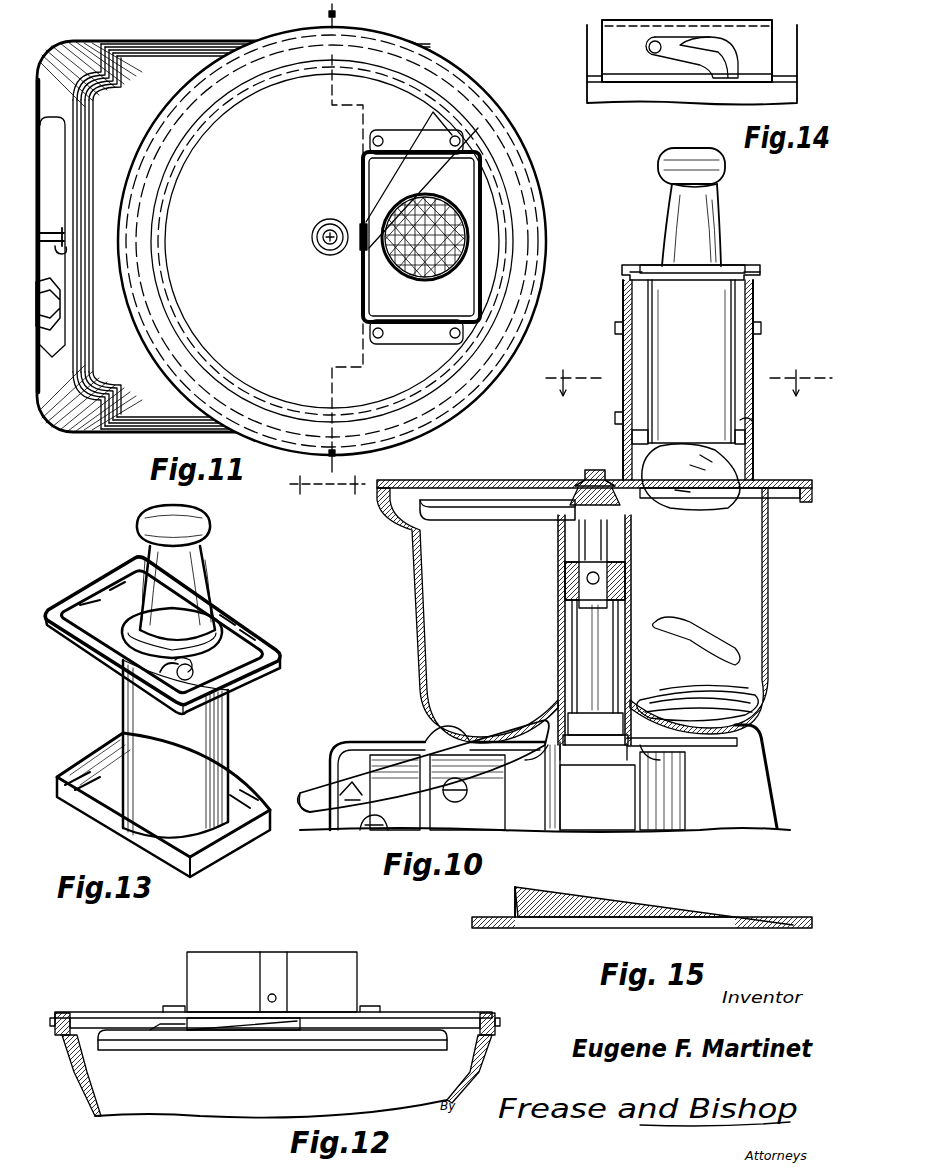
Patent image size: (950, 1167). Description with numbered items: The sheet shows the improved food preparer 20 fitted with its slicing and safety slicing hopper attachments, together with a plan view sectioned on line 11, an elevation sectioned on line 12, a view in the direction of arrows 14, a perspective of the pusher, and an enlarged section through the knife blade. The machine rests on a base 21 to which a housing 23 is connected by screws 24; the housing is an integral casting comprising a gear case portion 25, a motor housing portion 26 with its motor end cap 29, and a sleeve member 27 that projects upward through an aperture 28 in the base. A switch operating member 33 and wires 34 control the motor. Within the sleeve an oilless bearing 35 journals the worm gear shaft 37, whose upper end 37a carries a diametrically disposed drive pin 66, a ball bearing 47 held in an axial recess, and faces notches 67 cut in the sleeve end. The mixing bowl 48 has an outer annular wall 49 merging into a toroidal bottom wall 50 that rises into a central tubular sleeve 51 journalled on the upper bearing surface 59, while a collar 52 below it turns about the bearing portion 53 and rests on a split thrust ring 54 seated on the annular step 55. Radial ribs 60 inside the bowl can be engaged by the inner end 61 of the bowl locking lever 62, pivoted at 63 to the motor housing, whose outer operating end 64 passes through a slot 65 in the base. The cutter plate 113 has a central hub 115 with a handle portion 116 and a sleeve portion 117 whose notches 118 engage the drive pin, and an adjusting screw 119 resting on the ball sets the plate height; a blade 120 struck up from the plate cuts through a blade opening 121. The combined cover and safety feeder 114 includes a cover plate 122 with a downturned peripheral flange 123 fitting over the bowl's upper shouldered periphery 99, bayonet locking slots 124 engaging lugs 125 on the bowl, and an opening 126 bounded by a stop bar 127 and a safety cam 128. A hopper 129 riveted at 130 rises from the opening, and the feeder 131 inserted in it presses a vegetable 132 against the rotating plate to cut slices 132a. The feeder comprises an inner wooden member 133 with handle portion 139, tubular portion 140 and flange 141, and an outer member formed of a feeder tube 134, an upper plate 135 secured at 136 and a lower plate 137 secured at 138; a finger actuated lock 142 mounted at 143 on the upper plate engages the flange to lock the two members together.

In FIG. 10, the section line 11— 11 is at (689, 391).
In FIG. 11, the section line 12— 12 is at (336, 14).
In FIG. 11, the direction arrows 14— 14 is at (328, 495).
In FIG. 11, the food preparer 20 is at (478, 70).
In FIG. 10, the food preparer 20 is at (770, 682).
In FIG. 11, the base 21 is at (237, 236).
In FIG. 10, the base 21 is at (770, 778).
In FIG. 10, the housing 23 is at (690, 795).
In FIG. 10, the screws 24 is at (685, 760).
In FIG. 10, the gear case portion 25 is at (597, 797).
In FIG. 10, the motor housing portion 26 is at (467, 792).
In FIG. 10, the sleeve member 27 is at (592, 668).
In FIG. 10, the aperture 28 is at (630, 752).
In FIG. 10, the motor end cap 29 is at (395, 792).
In FIG. 11, the operating member 33 is at (58, 305).
In FIG. 10, the wires 34 is at (350, 795).
In FIG. 10, the oilless bearing 35 is at (560, 598).
In FIG. 10, the worm gear shaft 37 is at (626, 600).
In FIG. 10, the upper end of worm gear shaft 37a is at (612, 533).
In FIG. 10, the ball bearing 47 is at (572, 522).
In FIG. 11, the mixing bowl 48 is at (548, 255).
In FIG. 14, the mixing bowl 48 is at (640, 100).
In FIG. 10, the mixing bowl 48 is at (412, 606).
In FIG. 12, the mixing bowl 48 is at (458, 1080).
In FIG. 10, the outer annular wall 49 is at (424, 660).
In FIG. 10, the bottom wall 50 is at (468, 735).
In FIG. 10, the central tubular sleeve 51 is at (560, 645).
In FIG. 10, the collar 52 is at (579, 762).
In FIG. 10, the bearing portion 53 is at (595, 729).
In FIG. 10, the thrust ring 54 is at (546, 786).
In FIG. 10, the annular step 55 is at (560, 790).
In FIG. 10, the upper bearing surface 59 is at (586, 610).
In FIG. 10, the radial ribs 60 is at (565, 725).
In FIG. 10, the inner end of locking lever 61 is at (423, 766).
In FIG. 10, the bowl locking lever 62 is at (402, 812).
In FIG. 10, the pivot 63 is at (467, 788).
In FIG. 11, the outer operating end 64 is at (61, 234).
In FIG. 10, the outer operating end 64 is at (310, 815).
In FIG. 11, the slot 65 is at (66, 250).
In FIG. 10, the slot 65 is at (335, 764).
In FIG. 10, the drive pin 66 is at (570, 570).
In FIG. 10, the notches 67 is at (563, 590).
In FIG. 14, the upper shouldered periphery 99 is at (783, 62).
In FIG. 10, the upper shouldered periphery 99 is at (380, 495).
In FIG. 12, the upper shouldered periphery 99 is at (484, 1042).
In FIG. 11, the cutter plate 113 is at (255, 350).
In FIG. 10, the cutter plate 113 is at (493, 522).
In FIG. 12, the cutter plate 113 is at (402, 1042).
In FIG. 15, the cutter plate 113 is at (795, 916).
In FIG. 11, the combined cover and safety feeder 114 is at (541, 192).
In FIG. 10, the combined cover and safety feeder 114 is at (758, 336).
In FIG. 12, the combined cover and safety feeder 114 is at (365, 983).
In FIG. 10, the central hub 115 is at (565, 512).
In FIG. 11, the handle portion 116 is at (328, 256).
In FIG. 10, the handle portion 116 is at (600, 470).
In FIG. 10, the sleeve portion 117 is at (622, 548).
In FIG. 10, the notches 118 is at (625, 580).
In FIG. 11, the adjusting screw 119 is at (313, 232).
In FIG. 10, the adjusting screw 119 is at (582, 486).
In FIG. 11, the blade 120 is at (430, 113).
In FIG. 10, the blade 120 is at (690, 505).
In FIG. 12, the blade 120 is at (245, 1034).
In FIG. 15, the blade 120 is at (615, 890).
In FIG. 15, the blade opening 121 is at (515, 900).
In FIG. 11, the cover plate 122 is at (295, 247).
In FIG. 14, the cover plate 122 is at (652, 30).
In FIG. 10, the cover plate 122 is at (472, 482).
In FIG. 12, the cover plate 122 is at (422, 1012).
In FIG. 11, the peripheral flange 123 is at (516, 344).
In FIG. 14, the peripheral flange 123 is at (687, 51).
In FIG. 10, the peripheral flange 123 is at (798, 500).
In FIG. 12, the peripheral flange 123 is at (495, 1012).
In FIG. 14, the bayonet locking slots 124 is at (706, 78).
In FIG. 12, the bayonet locking slots 124 is at (54, 1020).
In FIG. 11, the lugs 125 is at (318, 24).
In FIG. 14, the lugs 125 is at (662, 48).
In FIG. 12, the lugs 125 is at (58, 1032).
In FIG. 10, the opening 126 is at (760, 478).
In FIG. 10, the stop bar 127 is at (648, 446).
In FIG. 12, the stop bar 127 is at (185, 1022).
In FIG. 10, the safety cam 128 is at (752, 496).
In FIG. 12, the safety cam 128 is at (215, 1015).
In FIG. 11, the hopper 129 is at (362, 308).
In FIG. 10, the hopper 129 is at (760, 358).
In FIG. 12, the hopper 129 is at (322, 980).
In FIG. 11, the rivets 130 is at (450, 141).
In FIG. 12, the rivets 130 is at (170, 1010).
In FIG. 10, the feeder 131 is at (755, 318).
In FIG. 13, the feeder 131 is at (268, 620).
In FIG. 10, the vegetable 132 is at (720, 500).
In FIG. 10, the slices 132a is at (700, 525).
In FIG. 11, the inner feeder member 133 is at (432, 198).
In FIG. 10, the inner feeder member 133 is at (722, 231).
In FIG. 13, the inner feeder member 133 is at (200, 625).
In FIG. 11, the feeder tube 134 is at (448, 283).
In FIG. 10, the feeder tube 134 is at (752, 300).
In FIG. 13, the feeder tube 134 is at (225, 720).
In FIG. 10, the upper plate 135 is at (762, 270).
In FIG. 13, the upper plate 135 is at (270, 652).
In FIG. 10, the upper plate fastening 136 is at (640, 285).
In FIG. 11, the lower plate 137 is at (425, 285).
In FIG. 10, the lower plate 137 is at (758, 425).
In FIG. 13, the lower plate 137 is at (240, 790).
In FIG. 10, the lower plate fastening 138 is at (650, 428).
In FIG. 13, the lower plate fastening 138 is at (228, 830).
In FIG. 10, the handle portion 139 is at (678, 208).
In FIG. 13, the handle portion 139 is at (190, 572).
In FIG. 11, the tubular portion 140 is at (410, 282).
In FIG. 10, the tubular portion 140 is at (691, 361).
In FIG. 10, the flange 141 is at (726, 270).
In FIG. 13, the flange 141 is at (130, 665).
In FIG. 13, the finger actuated lock 142 is at (170, 685).
In FIG. 13, the lock mounting 143 is at (198, 668).